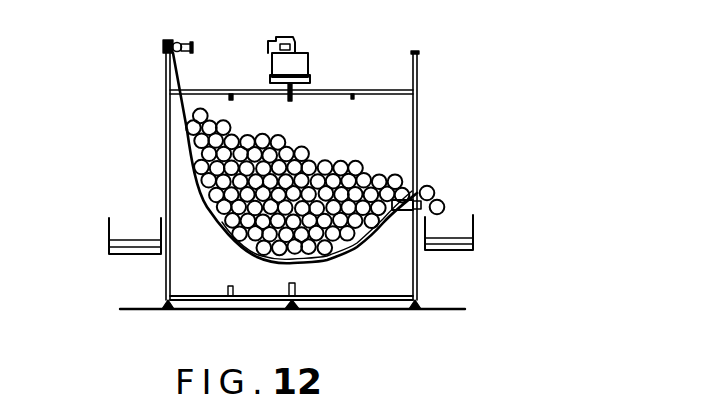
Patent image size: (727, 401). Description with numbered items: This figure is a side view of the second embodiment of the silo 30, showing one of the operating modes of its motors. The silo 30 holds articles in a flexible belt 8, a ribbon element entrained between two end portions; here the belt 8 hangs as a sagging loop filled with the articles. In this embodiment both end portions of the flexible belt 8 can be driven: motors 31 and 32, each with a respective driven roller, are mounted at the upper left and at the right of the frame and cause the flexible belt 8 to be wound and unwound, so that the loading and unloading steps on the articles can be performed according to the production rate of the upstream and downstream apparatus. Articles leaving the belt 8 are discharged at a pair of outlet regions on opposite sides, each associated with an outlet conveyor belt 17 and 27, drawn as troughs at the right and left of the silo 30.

The flexible belt 8 is at (186, 127).
The outlet conveyor belt 17 is at (453, 251).
The outlet conveyor belt 27 is at (137, 239).
The silo 30 is at (568, 127).
The motor 31 is at (166, 40).
The motor 32 is at (422, 188).